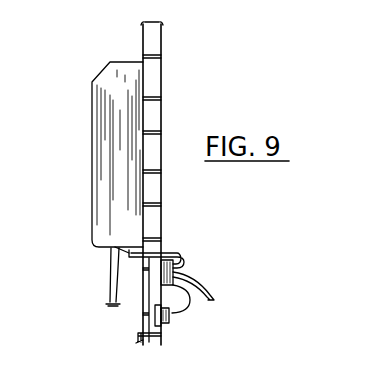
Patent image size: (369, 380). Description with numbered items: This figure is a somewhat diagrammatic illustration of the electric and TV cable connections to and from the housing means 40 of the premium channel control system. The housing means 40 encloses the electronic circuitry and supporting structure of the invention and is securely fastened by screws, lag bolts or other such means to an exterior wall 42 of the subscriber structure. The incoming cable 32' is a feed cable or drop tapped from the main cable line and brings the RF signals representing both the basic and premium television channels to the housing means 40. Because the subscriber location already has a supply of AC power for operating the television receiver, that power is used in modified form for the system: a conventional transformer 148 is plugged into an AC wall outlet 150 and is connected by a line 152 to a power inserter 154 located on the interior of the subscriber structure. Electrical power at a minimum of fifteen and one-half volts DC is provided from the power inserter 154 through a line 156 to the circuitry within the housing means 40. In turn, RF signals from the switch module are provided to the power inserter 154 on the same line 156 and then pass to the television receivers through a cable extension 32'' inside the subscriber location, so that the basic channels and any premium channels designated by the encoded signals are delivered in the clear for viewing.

The housing means 40 is at (118, 71).
The exterior wall 42 is at (162, 76).
The incoming cable 32' is at (91, 277).
The cable extension 32'' is at (222, 278).
The transformer 148 is at (169, 324).
The AC wall outlet 150 is at (138, 333).
The line 152 is at (191, 312).
The power inserter 154 is at (183, 260).
The line 156 is at (170, 259).